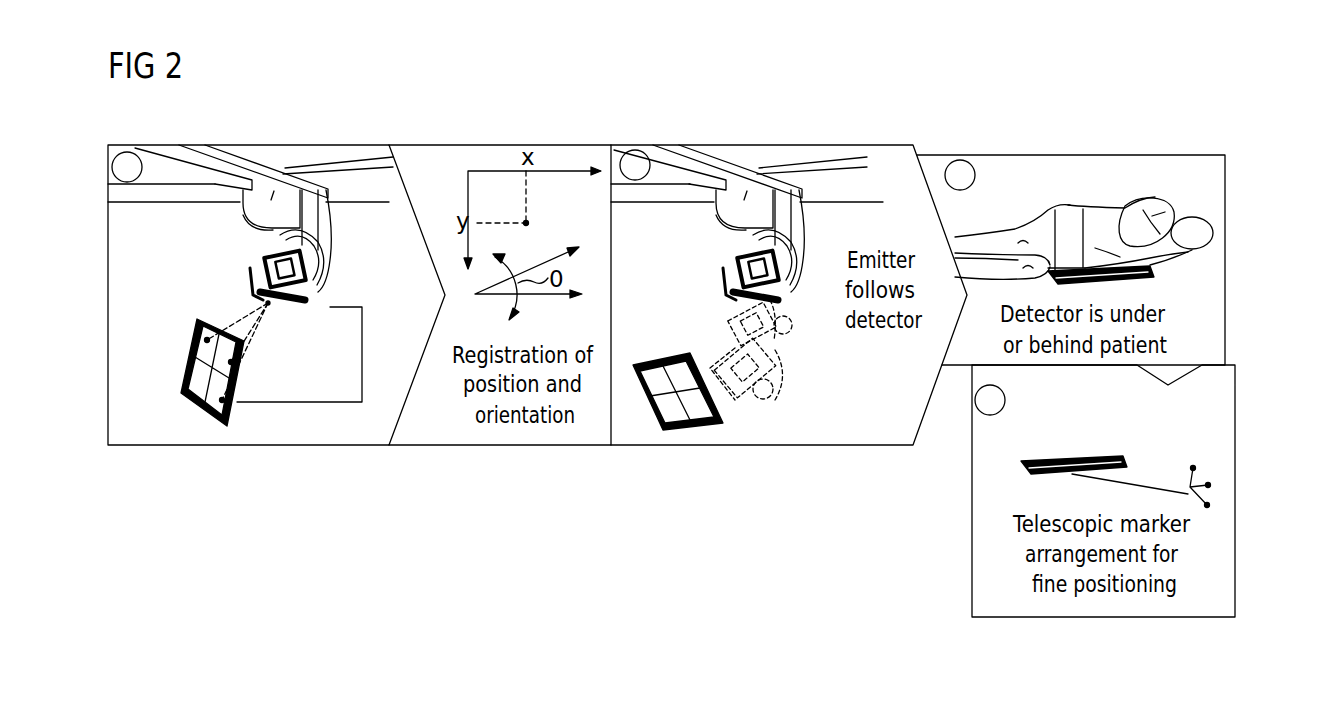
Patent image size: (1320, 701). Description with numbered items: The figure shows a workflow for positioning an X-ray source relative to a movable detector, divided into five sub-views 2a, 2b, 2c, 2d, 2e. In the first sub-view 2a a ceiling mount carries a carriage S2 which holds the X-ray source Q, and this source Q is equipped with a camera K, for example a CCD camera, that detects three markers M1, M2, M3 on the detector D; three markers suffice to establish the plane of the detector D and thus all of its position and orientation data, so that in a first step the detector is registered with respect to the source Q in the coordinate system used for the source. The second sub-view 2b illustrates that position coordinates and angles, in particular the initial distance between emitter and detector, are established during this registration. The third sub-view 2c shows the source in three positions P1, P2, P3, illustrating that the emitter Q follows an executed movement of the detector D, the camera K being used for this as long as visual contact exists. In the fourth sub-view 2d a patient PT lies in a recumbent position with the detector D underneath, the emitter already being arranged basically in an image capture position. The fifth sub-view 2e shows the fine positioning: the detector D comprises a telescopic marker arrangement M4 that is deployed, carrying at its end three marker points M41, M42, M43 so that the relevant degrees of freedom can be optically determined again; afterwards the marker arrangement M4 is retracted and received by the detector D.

The subsidiary figure showing registration 2a is at (247, 145).
The subsidiary figure showing registration of position and orientation 2b is at (497, 145).
The subsidiary figure showing emitter following detector 2c is at (762, 145).
The subsidiary figure showing patient with detector underneath 2d is at (1068, 155).
The subsidiary figure showing telescopic marker arrangement 2e is at (972, 505).
The carriage S2 is at (270, 197).
The X-ray source Q is at (262, 300).
The camera K is at (270, 310).
The marker M1 is at (203, 340).
The marker M2 is at (235, 365).
The marker M3 is at (226, 404).
The detector D is at (185, 398).
The source position P1 is at (722, 283).
The source position P2 is at (725, 322).
The source position P3 is at (775, 398).
The patient PT is at (1038, 228).
The telescopic marker arrangement M4 is at (1112, 485).
The marker point M41 is at (1193, 465).
The marker point M42 is at (1211, 485).
The marker point M43 is at (1211, 504).